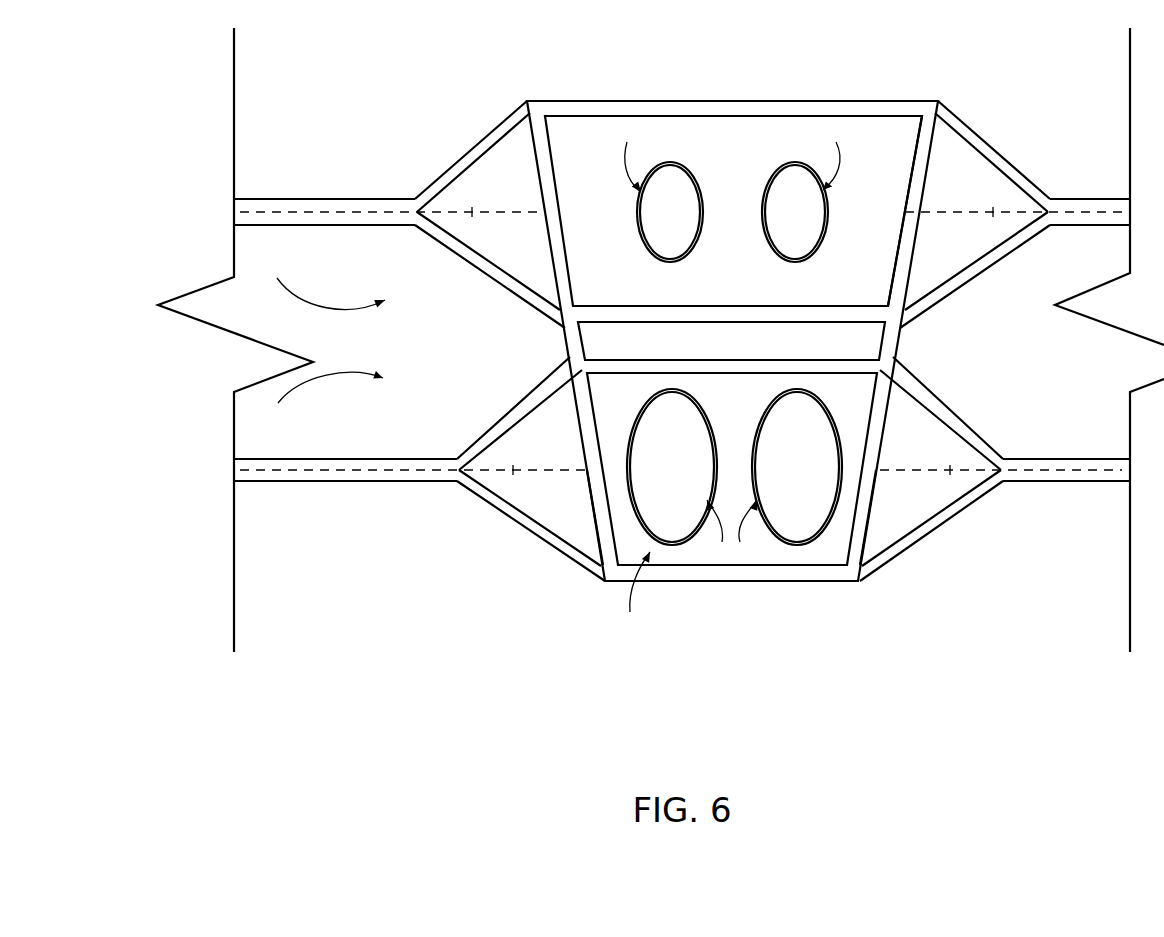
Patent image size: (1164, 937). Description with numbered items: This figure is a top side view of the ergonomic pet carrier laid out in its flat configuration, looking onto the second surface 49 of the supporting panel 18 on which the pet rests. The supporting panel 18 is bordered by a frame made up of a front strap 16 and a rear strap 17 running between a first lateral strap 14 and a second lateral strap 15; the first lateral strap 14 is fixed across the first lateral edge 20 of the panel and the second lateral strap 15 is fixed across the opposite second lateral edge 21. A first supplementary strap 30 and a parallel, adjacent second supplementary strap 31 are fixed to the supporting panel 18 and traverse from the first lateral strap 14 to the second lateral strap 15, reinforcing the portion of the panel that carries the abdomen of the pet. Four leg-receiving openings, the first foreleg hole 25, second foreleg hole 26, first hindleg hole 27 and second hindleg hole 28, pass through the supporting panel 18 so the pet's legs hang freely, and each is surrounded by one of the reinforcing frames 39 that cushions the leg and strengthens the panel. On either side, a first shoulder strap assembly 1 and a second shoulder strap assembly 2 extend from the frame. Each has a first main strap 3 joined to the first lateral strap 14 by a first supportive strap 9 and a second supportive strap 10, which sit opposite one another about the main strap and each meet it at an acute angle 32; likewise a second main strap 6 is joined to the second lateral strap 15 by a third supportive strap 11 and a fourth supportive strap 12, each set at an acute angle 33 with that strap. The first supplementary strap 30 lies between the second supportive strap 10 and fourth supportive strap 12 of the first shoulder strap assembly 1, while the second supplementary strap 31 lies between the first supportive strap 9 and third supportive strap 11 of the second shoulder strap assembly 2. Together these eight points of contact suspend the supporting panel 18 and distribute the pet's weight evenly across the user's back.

The first shoulder strap assembly 1 is at (323, 280).
The second shoulder strap assembly 2 is at (322, 400).
The first main strap 3 is at (258, 208).
The second main strap 6 is at (1118, 220).
The first supportive strap 9 is at (462, 182).
The second supportive strap 10 is at (462, 250).
The third supportive strap 11 is at (995, 157).
The fourth supportive strap 12 is at (990, 258).
The first lateral strap 14 is at (614, 572).
The second lateral strap 15 is at (847, 573).
The front strap 16 is at (670, 105).
The rear strap 17 is at (767, 573).
The supporting panel 18 is at (632, 596).
The first lateral edge 20 is at (548, 128).
The second lateral edge 21 is at (910, 120).
The first foreleg hole 25 is at (632, 154).
The second foreleg hole 26 is at (830, 153).
The first hindleg hole 27 is at (708, 533).
The second hindleg hole 28 is at (754, 533).
The first supplementary strap 30 is at (585, 307).
The second supplementary strap 31 is at (718, 372).
The acute angle 32 is at (467, 193).
The acute angle 33 is at (997, 193).
The plurality of reinforcing frames 39 is at (695, 255).
The second surface 49 is at (675, 553).